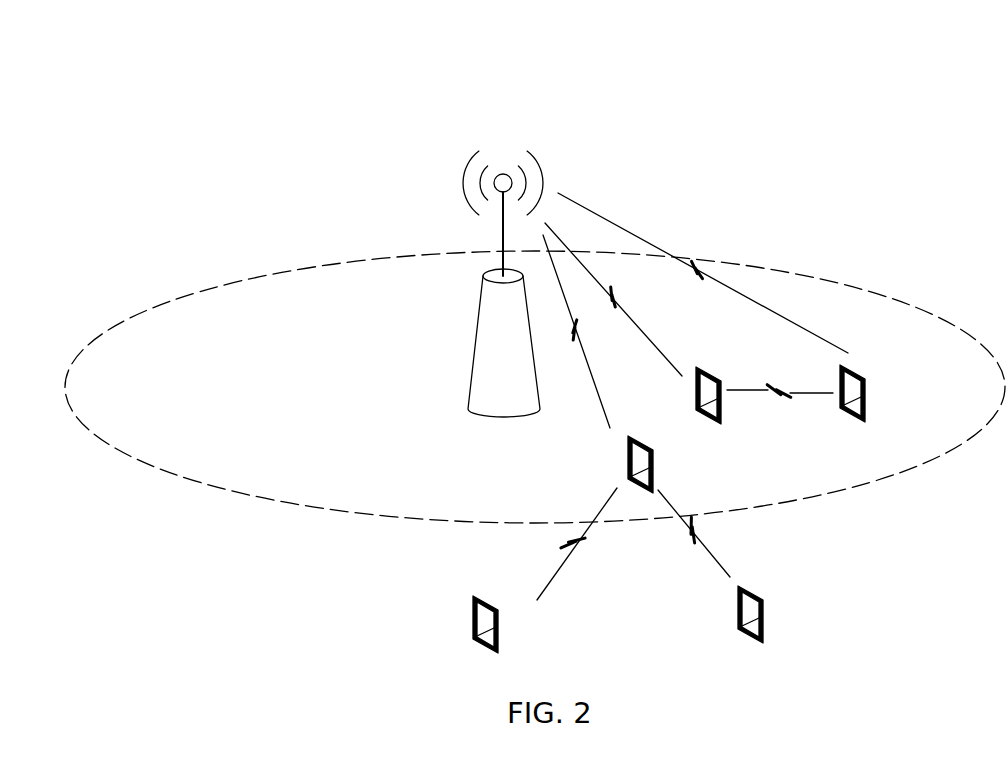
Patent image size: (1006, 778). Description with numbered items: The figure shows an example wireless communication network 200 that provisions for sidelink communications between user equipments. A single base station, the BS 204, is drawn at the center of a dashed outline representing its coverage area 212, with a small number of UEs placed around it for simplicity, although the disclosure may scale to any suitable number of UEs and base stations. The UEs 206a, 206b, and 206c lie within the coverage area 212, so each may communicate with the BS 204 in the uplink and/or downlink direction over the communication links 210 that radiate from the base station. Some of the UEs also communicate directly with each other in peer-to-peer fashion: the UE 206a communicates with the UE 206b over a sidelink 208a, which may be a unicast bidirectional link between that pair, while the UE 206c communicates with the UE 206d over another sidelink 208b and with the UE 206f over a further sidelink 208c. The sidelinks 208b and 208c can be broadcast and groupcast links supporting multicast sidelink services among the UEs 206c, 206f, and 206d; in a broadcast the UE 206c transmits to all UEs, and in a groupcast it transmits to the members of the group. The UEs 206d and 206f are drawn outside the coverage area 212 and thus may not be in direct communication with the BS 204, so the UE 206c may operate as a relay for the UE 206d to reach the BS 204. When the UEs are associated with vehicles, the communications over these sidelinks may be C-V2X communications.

The wireless communication network 200 is at (913, 114).
The BS 204 is at (468, 398).
The UE 206a is at (692, 392).
The UE 206b is at (867, 398).
The UE 206c is at (626, 462).
The UE 206d is at (765, 618).
The UE 206f is at (500, 624).
The sidelink 208a is at (766, 384).
The sidelink 208b is at (691, 537).
The sidelink 208c is at (547, 575).
The communication links 210 is at (617, 226).
The coverage area 212 is at (275, 503).